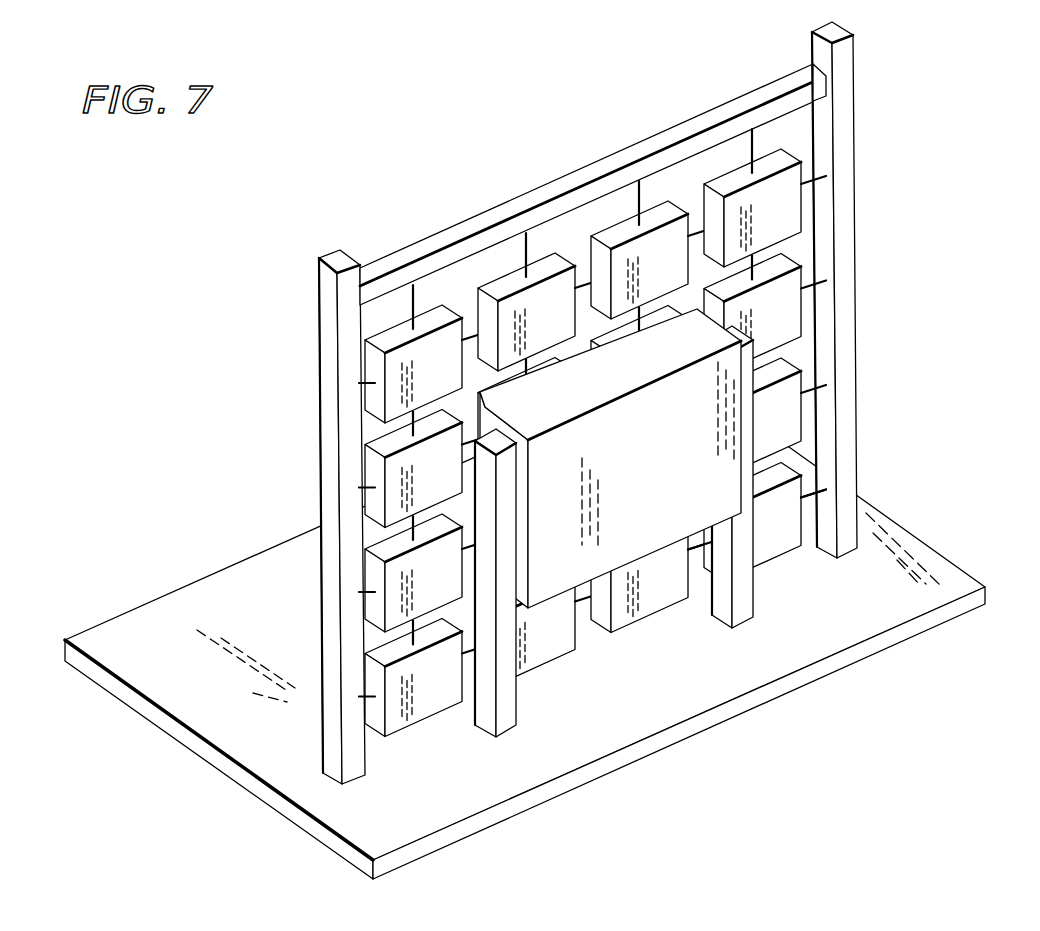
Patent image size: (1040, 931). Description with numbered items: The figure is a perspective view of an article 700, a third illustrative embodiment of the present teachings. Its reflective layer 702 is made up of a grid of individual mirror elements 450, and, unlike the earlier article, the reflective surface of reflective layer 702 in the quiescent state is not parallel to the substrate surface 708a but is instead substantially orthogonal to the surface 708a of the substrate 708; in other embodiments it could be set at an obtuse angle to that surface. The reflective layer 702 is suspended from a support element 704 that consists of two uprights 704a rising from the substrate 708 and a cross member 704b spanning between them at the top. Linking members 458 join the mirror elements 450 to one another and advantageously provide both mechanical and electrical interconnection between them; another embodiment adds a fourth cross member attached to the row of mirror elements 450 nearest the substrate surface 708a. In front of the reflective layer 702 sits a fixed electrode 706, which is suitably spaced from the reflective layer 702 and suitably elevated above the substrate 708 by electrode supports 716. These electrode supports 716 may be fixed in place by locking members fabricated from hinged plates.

The article 700 is at (325, 188).
The reflective layer 702 is at (812, 66).
The support element 704 is at (858, 89).
The uprights 704a is at (321, 333).
The cross member 704b is at (803, 80).
The fixed electrode 706 is at (705, 404).
The substrate 708 is at (933, 622).
The substrate surface 708a is at (934, 549).
The mirror elements 450 is at (418, 708).
The linking members 458 is at (806, 500).
The electrode supports 716 is at (718, 610).